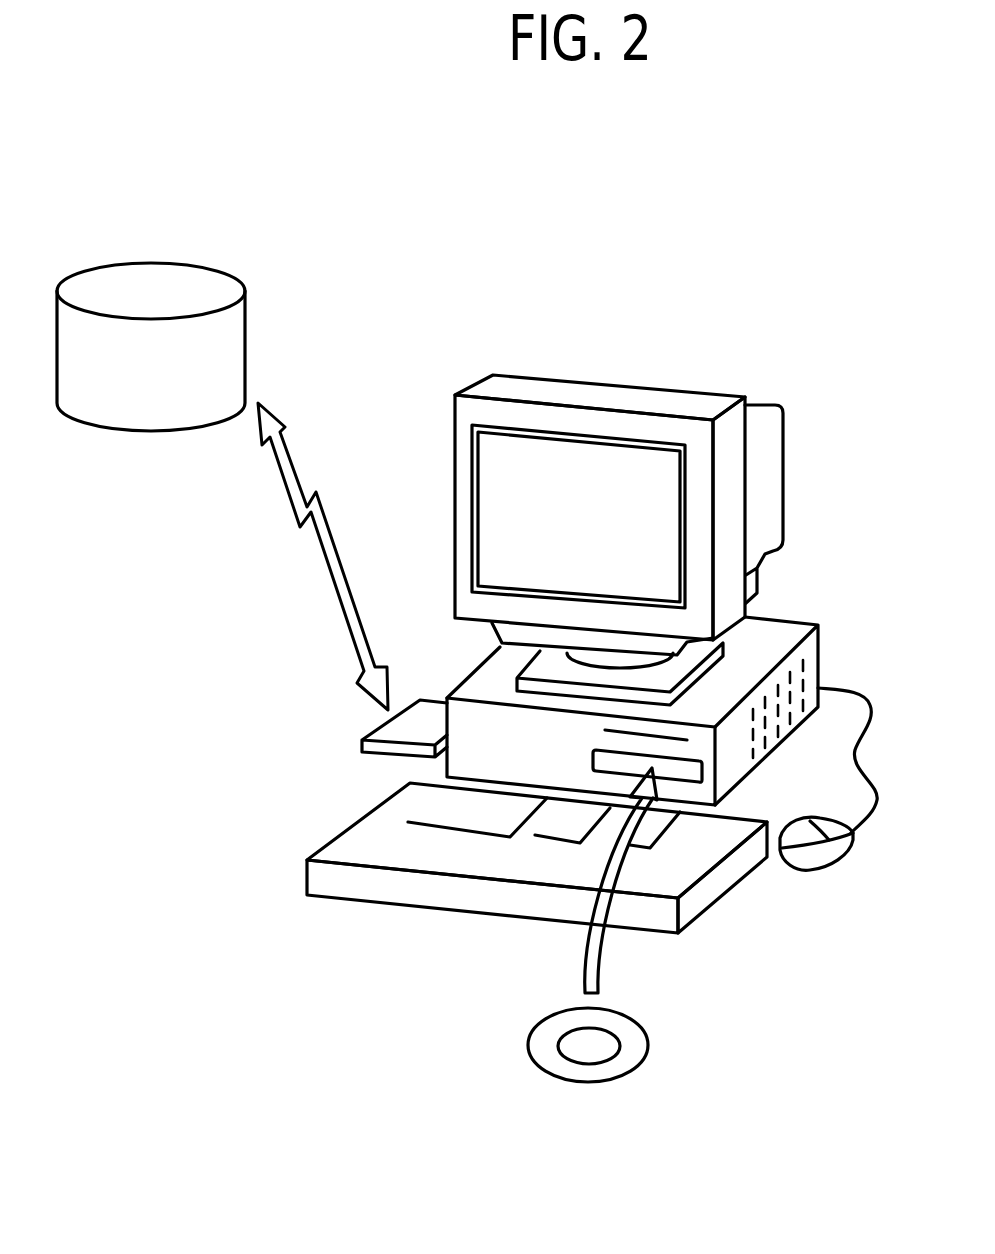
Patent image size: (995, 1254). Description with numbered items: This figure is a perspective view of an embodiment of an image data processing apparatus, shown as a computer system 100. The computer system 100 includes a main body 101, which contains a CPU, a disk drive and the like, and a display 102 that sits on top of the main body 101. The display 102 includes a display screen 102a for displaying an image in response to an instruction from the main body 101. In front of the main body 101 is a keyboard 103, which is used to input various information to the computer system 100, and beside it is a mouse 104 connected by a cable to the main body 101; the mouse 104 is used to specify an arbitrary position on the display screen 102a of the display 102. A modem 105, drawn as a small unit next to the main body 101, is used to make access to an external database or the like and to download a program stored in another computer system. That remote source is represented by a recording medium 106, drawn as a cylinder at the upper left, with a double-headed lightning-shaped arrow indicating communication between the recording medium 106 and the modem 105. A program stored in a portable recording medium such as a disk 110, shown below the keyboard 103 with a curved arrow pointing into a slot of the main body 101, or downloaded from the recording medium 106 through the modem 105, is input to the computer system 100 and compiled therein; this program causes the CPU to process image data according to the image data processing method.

The computer system 100 is at (765, 311).
The main body 101 is at (799, 619).
The display 102 is at (729, 395).
The display screen 102a is at (533, 458).
The keyboard 103 is at (362, 833).
The mouse 104 is at (818, 855).
The modem 105 is at (370, 718).
The recording medium 106 is at (217, 270).
The disk 110 is at (648, 1043).